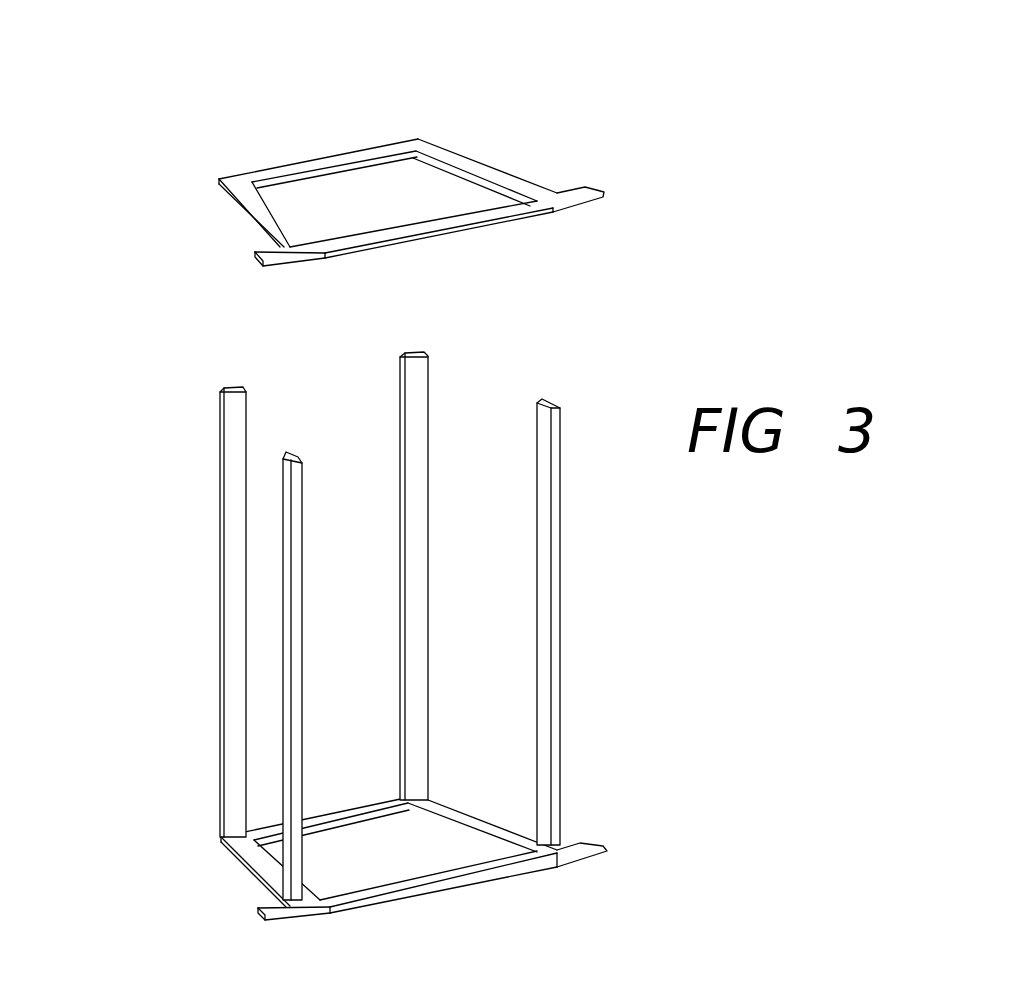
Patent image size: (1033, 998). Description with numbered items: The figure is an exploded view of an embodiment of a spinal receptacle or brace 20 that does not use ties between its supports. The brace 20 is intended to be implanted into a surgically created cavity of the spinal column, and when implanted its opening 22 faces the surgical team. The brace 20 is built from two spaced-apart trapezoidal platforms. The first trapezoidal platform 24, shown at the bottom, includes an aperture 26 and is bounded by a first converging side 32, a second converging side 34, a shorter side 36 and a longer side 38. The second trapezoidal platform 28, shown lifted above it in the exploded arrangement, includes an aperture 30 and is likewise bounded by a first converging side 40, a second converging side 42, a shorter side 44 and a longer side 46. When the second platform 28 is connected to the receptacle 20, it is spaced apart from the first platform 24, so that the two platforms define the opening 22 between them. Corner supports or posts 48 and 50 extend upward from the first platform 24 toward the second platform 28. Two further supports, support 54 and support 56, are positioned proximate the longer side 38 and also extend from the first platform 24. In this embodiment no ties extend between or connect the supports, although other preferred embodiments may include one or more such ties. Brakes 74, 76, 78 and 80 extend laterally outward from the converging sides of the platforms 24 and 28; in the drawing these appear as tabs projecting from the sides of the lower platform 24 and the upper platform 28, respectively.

The receptacle 20 is at (668, 546).
The opening 22 is at (505, 614).
The first trapezoidal platform 24 is at (398, 815).
The aperture 26 is at (398, 860).
The second trapezoidal platform 28 is at (475, 215).
The aperture 30 is at (399, 153).
The first converging side 32 is at (253, 869).
The second converging side 34 is at (493, 813).
The shorter side 36 is at (335, 823).
The longer side 38 is at (420, 897).
The first converging side 40 is at (250, 213).
The second converging side 42 is at (507, 170).
The shorter side 44 is at (273, 164).
The longer side 46 is at (420, 238).
The corner support 48 is at (220, 423).
The corner support 50 is at (401, 397).
The support 54 is at (294, 486).
The support 56 is at (555, 423).
The brake 74 is at (267, 918).
The brake 76 is at (605, 845).
The brake 78 is at (255, 252).
The brake 80 is at (607, 192).